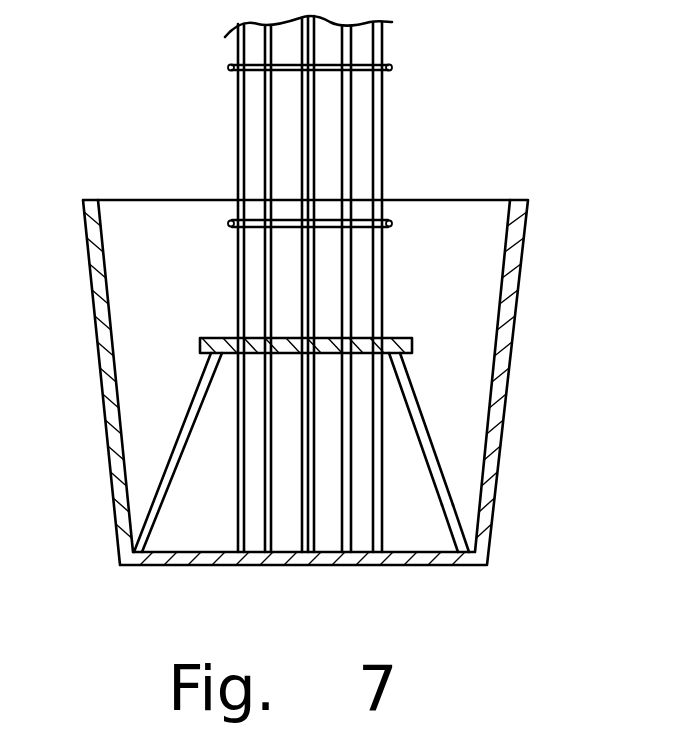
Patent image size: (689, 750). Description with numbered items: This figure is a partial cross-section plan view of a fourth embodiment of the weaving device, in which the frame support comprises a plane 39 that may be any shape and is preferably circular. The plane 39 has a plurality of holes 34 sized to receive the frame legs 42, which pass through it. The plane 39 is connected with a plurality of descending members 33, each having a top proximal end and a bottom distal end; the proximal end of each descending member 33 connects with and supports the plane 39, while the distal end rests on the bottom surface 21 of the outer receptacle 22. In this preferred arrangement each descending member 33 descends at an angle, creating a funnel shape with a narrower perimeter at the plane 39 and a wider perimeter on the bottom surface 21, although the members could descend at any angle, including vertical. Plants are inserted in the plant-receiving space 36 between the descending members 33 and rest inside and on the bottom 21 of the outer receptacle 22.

The bottom surface 21 is at (203, 540).
The outer receptacle 22 is at (501, 383).
The descending member 33 is at (187, 431).
The holes 34 is at (385, 337).
The plant-receiving space 36 is at (413, 492).
The plane 39 is at (215, 337).
The frame legs 42 is at (264, 122).